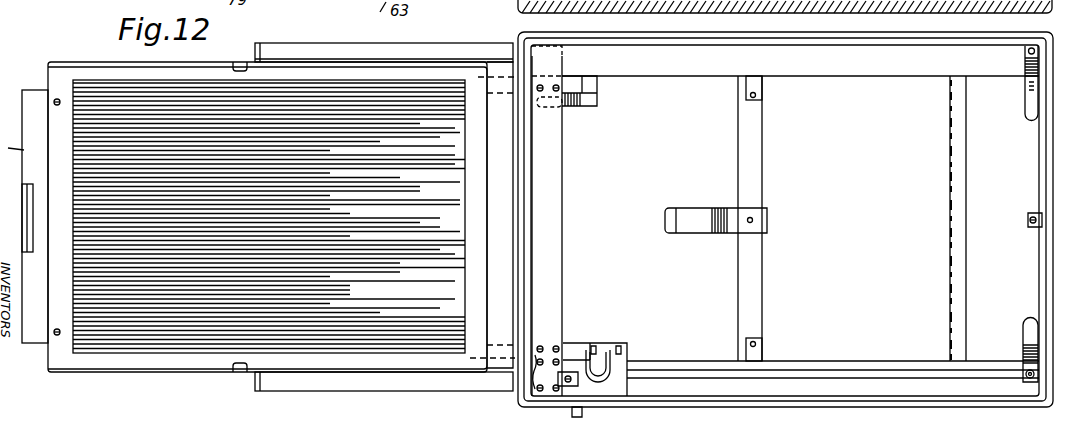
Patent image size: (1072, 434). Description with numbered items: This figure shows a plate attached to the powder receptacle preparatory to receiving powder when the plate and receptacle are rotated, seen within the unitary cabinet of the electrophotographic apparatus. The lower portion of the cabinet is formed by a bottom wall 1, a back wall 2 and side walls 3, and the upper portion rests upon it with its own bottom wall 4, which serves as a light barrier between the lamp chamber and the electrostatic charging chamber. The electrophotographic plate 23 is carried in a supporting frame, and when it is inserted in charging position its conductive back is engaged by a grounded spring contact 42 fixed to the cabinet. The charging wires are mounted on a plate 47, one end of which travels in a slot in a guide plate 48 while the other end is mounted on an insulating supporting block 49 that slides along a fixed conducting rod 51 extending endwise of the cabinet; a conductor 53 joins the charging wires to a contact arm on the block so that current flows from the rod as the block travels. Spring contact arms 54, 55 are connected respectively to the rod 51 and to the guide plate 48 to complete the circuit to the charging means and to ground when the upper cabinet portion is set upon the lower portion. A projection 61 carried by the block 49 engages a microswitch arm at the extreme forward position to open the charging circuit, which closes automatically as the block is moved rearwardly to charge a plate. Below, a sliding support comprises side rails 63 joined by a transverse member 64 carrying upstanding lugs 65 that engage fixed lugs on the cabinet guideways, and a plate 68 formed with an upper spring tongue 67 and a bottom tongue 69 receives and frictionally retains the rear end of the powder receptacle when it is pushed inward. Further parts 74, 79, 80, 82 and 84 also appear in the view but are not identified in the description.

The bottom wall 1 is at (785, 220).
The back wall 2 is at (1045, 149).
The side walls 3 is at (895, 33).
The bottom wall 4 is at (57, 122).
The electrophotographic plate 23 is at (269, 216).
The spring contact 42 is at (572, 100).
The plate 47 is at (557, 257).
The guide plate 48 is at (650, 50).
The insulating supporting block 49 is at (618, 386).
The fixed conducting rod 51 is at (655, 371).
The conductor 53 is at (600, 353).
The spring contact arm 54 is at (1028, 325).
The spring contact arm 55 is at (1030, 100).
The projection 61 is at (568, 375).
The side rails 63 is at (343, 48).
The transverse member 64 is at (758, 280).
The upstanding lugs 65 is at (766, 92).
The upper spring tongue 67 is at (722, 234).
The plate 68 is at (765, 216).
The bottom tongue 69 is at (684, 208).
The side member tab 74 is at (12, 159).
The guide lug 79 is at (240, 62).
The handle bar 80 is at (30, 188).
The hidden coupling 82 is at (478, 77).
The slide frame 84 is at (500, 112).